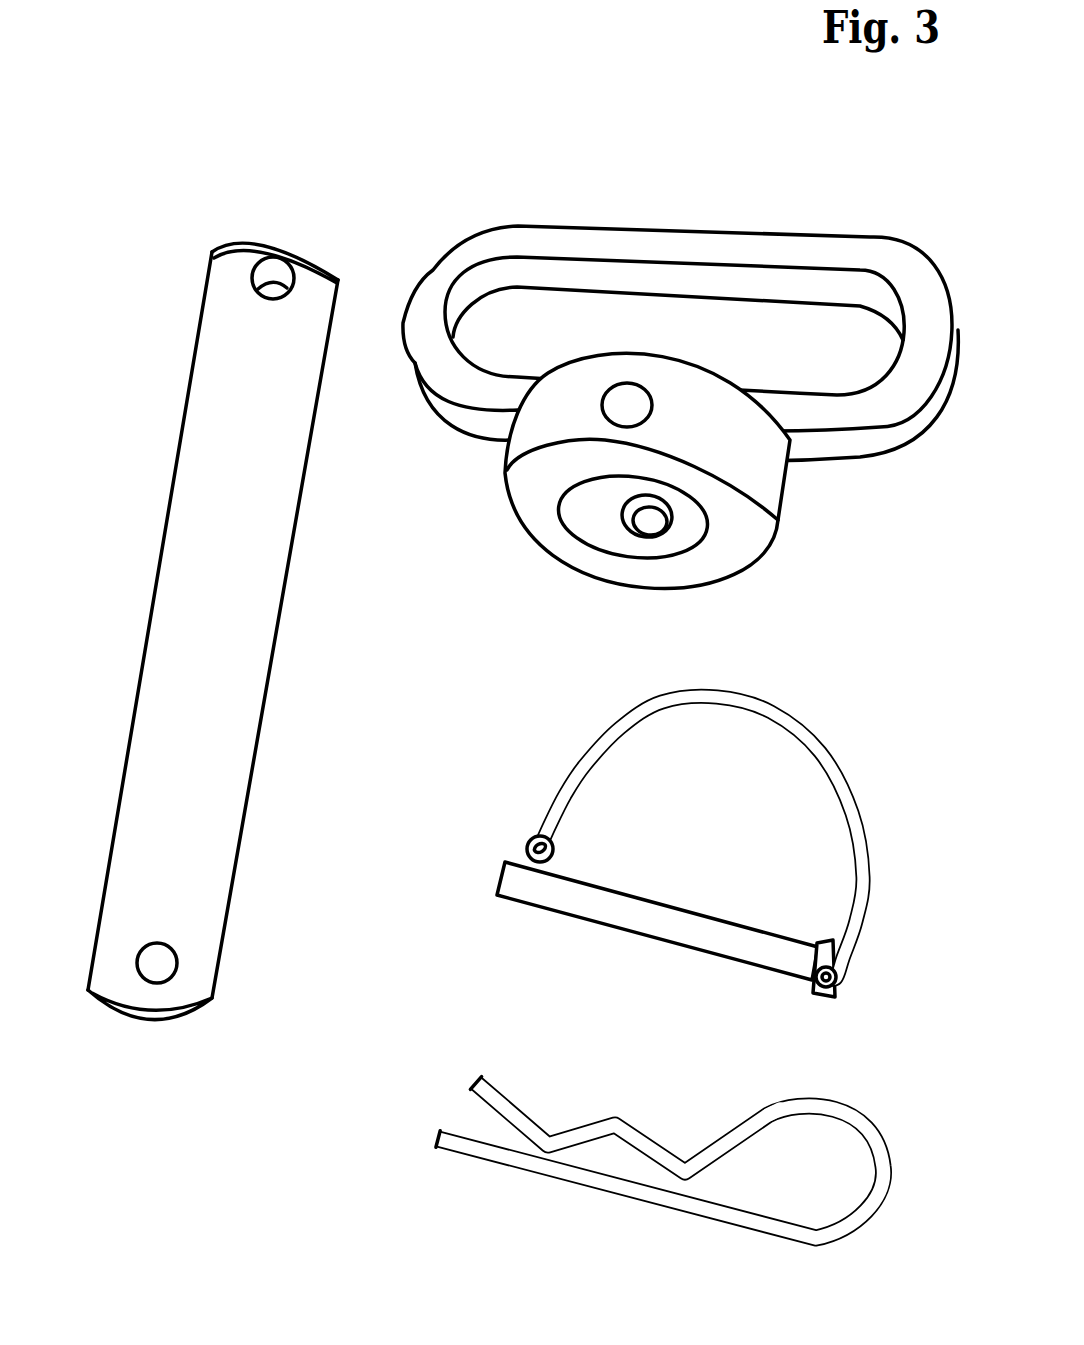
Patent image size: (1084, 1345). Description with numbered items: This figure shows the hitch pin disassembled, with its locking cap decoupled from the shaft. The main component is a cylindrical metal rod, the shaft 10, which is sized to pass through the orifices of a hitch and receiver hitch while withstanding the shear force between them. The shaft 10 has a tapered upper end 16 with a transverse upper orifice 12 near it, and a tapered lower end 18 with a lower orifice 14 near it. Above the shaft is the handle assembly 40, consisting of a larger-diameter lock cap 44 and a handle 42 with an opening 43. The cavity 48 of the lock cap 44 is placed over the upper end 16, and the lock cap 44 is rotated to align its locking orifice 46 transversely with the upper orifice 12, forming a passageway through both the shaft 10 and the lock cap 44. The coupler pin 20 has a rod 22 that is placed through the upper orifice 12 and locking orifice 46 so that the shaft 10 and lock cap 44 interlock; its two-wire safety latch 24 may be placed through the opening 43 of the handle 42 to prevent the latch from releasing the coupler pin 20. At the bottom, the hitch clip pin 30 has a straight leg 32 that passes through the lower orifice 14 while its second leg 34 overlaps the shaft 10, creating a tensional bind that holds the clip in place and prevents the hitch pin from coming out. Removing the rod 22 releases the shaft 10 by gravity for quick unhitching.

The shaft 10 is at (196, 633).
The upper orifice 12 is at (301, 257).
The lower orifice 14 is at (165, 1011).
The upper end 16 is at (247, 235).
The lower end 18 is at (127, 1032).
The coupler pin 20 is at (680, 838).
The rod 22 is at (666, 929).
The two-wire safety latch 24 is at (713, 833).
The hitch clip pin 30 is at (655, 1143).
The straight leg 32 is at (661, 1195).
The second leg 34 is at (628, 1127).
The handle assembly 40 is at (680, 375).
The handle 42 is at (680, 318).
The opening 43 is at (674, 326).
The lock cap 44 is at (673, 472).
The locking orifice 46 is at (649, 376).
The cavity 48 is at (615, 543).